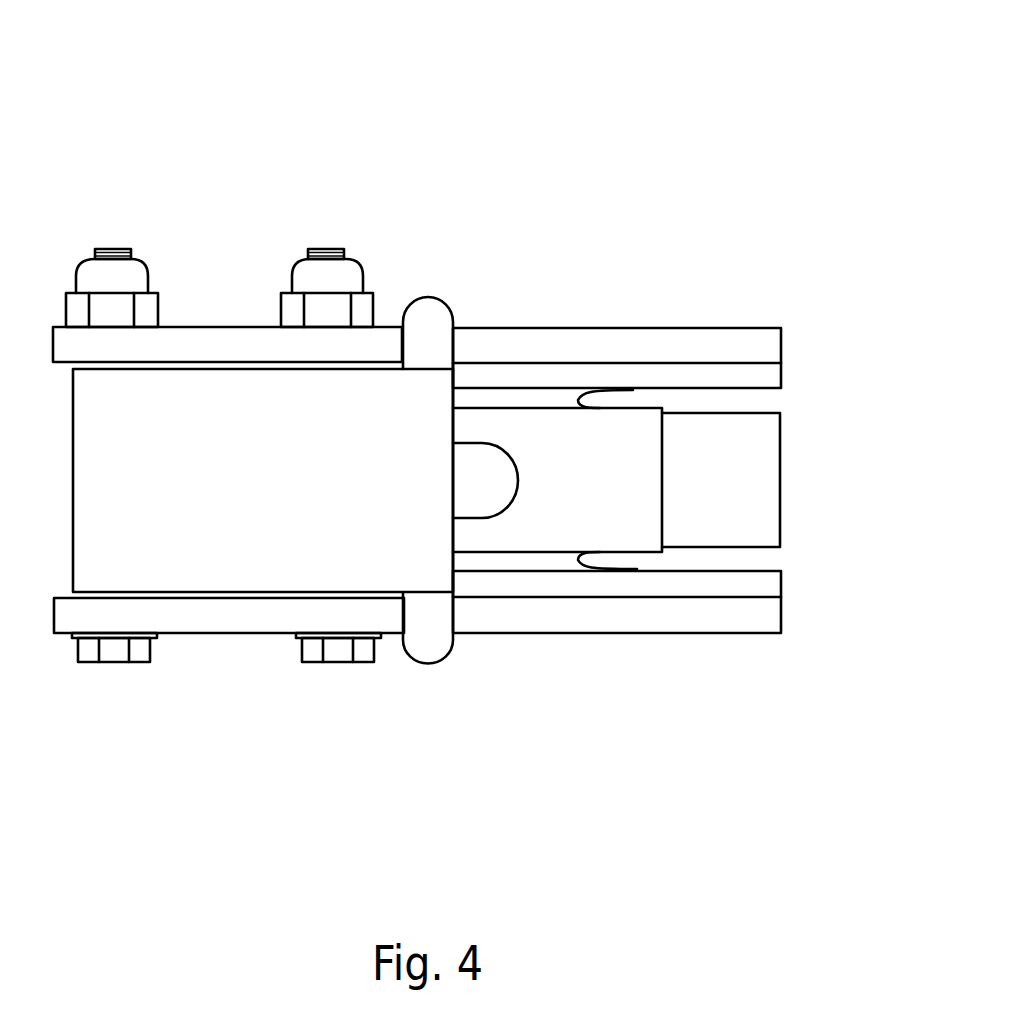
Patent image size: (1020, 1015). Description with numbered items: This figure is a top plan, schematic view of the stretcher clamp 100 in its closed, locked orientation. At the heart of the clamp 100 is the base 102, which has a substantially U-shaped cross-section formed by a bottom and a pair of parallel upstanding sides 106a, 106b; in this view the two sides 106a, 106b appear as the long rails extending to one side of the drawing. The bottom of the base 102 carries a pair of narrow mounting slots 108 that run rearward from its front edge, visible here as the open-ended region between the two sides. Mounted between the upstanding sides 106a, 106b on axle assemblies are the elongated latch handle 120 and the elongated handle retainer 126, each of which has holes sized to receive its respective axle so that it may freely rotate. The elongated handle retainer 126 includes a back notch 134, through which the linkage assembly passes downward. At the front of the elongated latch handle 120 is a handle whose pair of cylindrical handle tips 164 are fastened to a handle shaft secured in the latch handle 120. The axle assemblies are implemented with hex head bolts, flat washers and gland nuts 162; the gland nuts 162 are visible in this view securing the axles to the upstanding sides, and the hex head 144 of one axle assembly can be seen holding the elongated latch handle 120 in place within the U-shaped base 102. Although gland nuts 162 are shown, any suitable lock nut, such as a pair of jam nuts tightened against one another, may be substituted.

The clamp 100 is at (622, 154).
The base 102 is at (537, 575).
The upstanding side 106a is at (700, 634).
The upstanding side 106b is at (676, 327).
The narrow mounting slots 108 is at (767, 400).
The elongated latch handle 120 is at (275, 487).
The elongated handle retainer 126 is at (543, 462).
The back notch 134 is at (488, 467).
The hex head 144 is at (338, 662).
The gland nut 162 is at (292, 293).
The cylindrical handle tips 164 is at (427, 297).